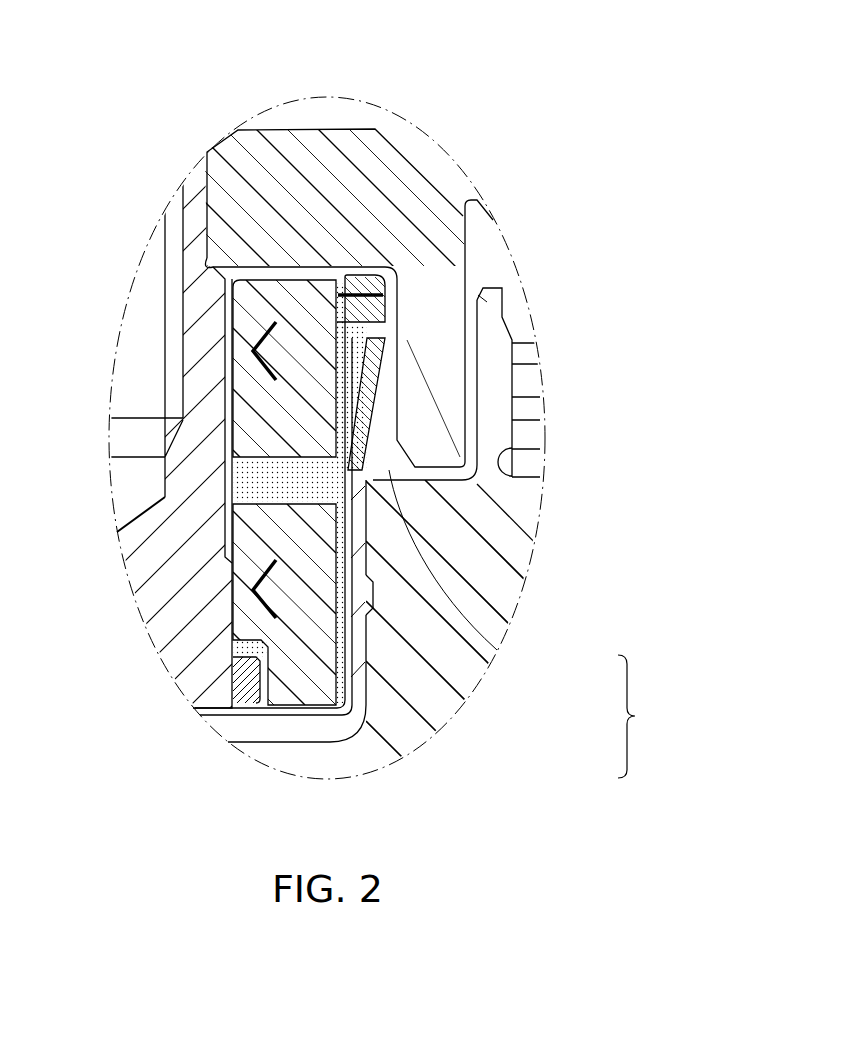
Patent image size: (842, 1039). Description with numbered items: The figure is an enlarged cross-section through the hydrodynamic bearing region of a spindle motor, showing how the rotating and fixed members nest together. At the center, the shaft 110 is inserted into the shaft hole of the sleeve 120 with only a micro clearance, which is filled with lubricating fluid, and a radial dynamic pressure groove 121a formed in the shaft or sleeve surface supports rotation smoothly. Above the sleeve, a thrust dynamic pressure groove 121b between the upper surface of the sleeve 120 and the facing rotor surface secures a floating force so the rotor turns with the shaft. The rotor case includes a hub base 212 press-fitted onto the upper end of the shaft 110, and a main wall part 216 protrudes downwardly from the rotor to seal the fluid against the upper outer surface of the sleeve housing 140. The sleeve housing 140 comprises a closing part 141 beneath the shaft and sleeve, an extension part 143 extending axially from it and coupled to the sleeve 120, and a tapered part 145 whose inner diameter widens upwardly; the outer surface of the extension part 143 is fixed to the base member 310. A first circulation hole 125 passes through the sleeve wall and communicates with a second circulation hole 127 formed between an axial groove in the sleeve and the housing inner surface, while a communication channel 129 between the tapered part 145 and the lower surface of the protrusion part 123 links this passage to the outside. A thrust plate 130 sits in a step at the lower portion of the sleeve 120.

The shaft 110 is at (178, 652).
The sleeve 120 is at (283, 693).
The radial dynamic pressure groove 121a is at (261, 328).
The thrust dynamic pressure groove 121b is at (387, 314).
The protrusion part 123 is at (387, 268).
The first circulation hole 125 is at (308, 458).
The second circulation hole 127 is at (360, 440).
The communication channel 129 is at (378, 332).
The thrust plate 130 is at (245, 698).
The sleeve housing 140 is at (648, 716).
The closing part 141 is at (317, 747).
The extension part 143 is at (360, 600).
The tapered part 145 is at (360, 586).
The hub base 212 is at (444, 166).
The main wall part 216 is at (433, 387).
The base member 310 is at (513, 540).